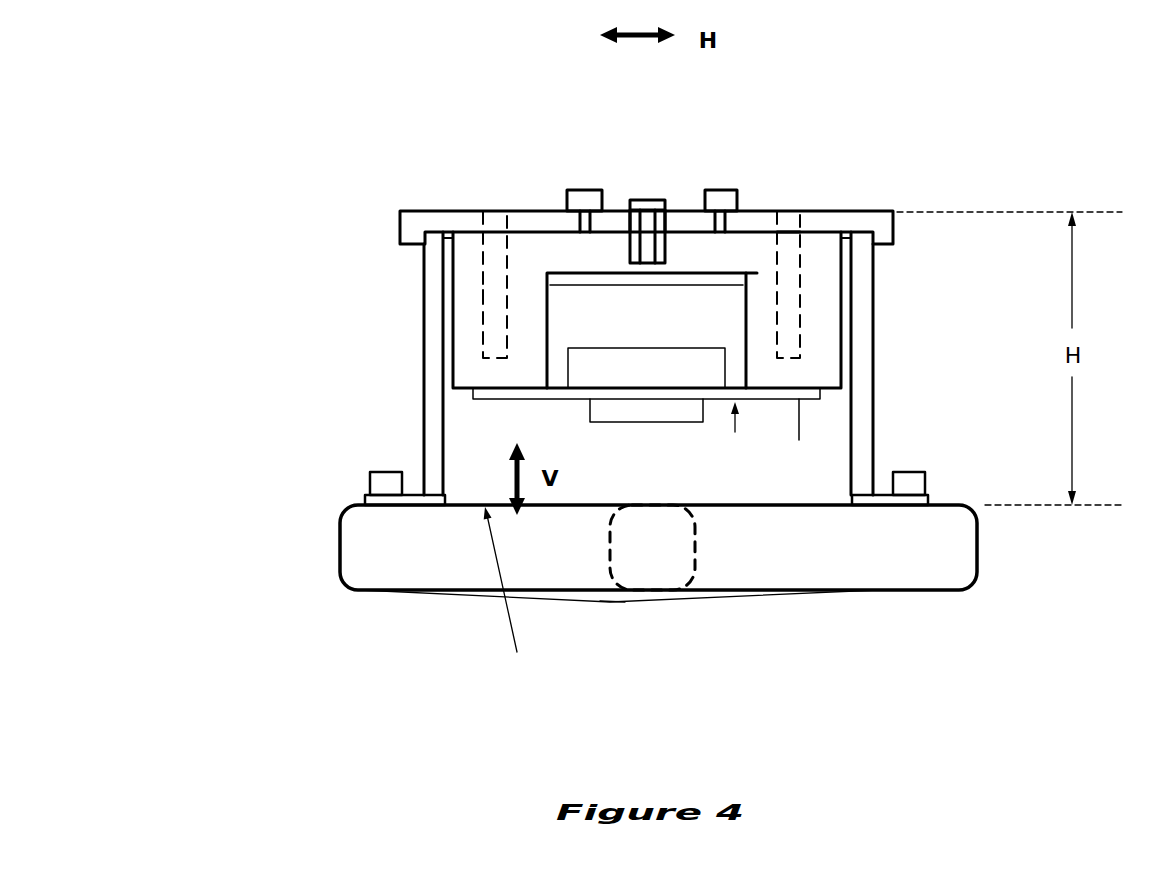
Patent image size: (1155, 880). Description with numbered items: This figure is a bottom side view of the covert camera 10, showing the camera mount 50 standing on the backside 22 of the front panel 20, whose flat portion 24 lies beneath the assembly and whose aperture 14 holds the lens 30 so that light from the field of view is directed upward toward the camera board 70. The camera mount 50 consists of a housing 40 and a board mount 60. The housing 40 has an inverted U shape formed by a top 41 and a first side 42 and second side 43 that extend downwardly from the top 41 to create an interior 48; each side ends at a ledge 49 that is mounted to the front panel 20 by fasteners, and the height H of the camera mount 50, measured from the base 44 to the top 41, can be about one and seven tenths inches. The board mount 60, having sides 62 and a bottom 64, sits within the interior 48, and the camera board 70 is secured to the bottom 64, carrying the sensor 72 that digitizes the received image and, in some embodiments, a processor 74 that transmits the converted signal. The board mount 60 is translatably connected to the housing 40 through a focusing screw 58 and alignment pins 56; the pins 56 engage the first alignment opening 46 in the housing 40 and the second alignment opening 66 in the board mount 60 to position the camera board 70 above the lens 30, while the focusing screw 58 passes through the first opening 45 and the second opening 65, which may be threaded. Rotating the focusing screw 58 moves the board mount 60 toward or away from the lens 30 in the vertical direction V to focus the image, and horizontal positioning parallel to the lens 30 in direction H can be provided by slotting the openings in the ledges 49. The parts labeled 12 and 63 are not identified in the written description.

The camera 10 is at (165, 80).
The fastener bolts 12 is at (575, 197).
The aperture 14 is at (610, 590).
The front panel 20 is at (340, 575).
The backside 22 is at (505, 599).
The flat portion 24 is at (735, 600).
The lens 30 is at (652, 548).
The housing 40 is at (612, 297).
The top 41 is at (517, 212).
The first side 42 is at (433, 379).
The second side 43 is at (862, 307).
The base 44 is at (402, 505).
The first opening 45 is at (628, 205).
The first alignment opening 46 is at (483, 220).
The interior 48 is at (487, 422).
The ledge 49 is at (395, 493).
The camera mount 50 is at (647, 393).
The alignment pins 56 is at (788, 222).
The focusing screw 58 is at (652, 200).
The board mount 60 is at (596, 303).
The sides 62 is at (463, 338).
The central block 63 is at (818, 273).
The bottom 64 is at (792, 438).
The second opening 65 is at (670, 225).
The second alignment opening 66 is at (485, 295).
The camera board 70 is at (732, 435).
The sensor 72 is at (672, 422).
The processor 74 is at (652, 347).